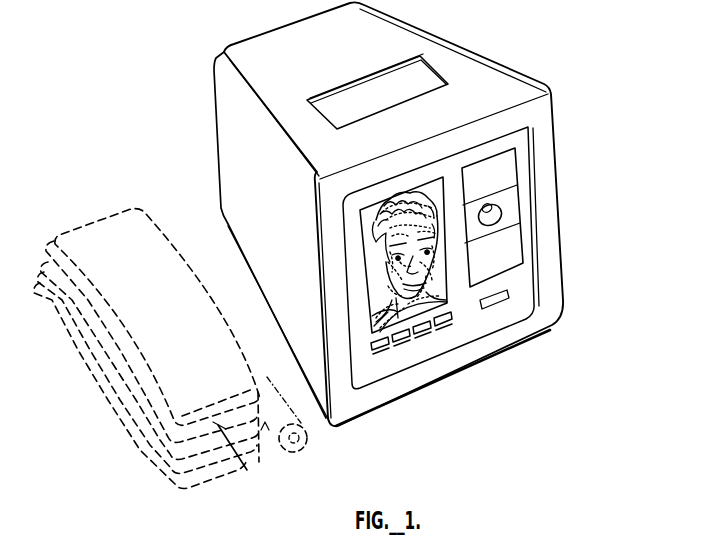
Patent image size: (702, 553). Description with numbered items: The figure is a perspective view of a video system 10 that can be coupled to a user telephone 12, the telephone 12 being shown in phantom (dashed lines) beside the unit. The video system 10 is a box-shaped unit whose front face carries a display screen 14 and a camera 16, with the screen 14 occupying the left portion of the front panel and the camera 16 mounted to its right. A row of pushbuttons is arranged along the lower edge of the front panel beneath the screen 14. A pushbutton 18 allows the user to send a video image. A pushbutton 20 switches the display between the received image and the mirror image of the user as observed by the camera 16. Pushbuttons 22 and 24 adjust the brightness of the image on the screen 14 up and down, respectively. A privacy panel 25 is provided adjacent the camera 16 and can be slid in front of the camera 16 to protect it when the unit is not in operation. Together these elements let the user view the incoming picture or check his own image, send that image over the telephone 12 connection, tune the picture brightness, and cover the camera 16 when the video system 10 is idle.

The video system 10 is at (523, 34).
The user telephone 12 is at (93, 218).
The display screen 14 is at (372, 215).
The camera 16 is at (500, 213).
The pushbutton 18 is at (382, 352).
The pushbutton 20 is at (402, 344).
The pushbutton 22 is at (423, 336).
The pushbutton 24 is at (444, 327).
The privacy panel 25 is at (517, 195).